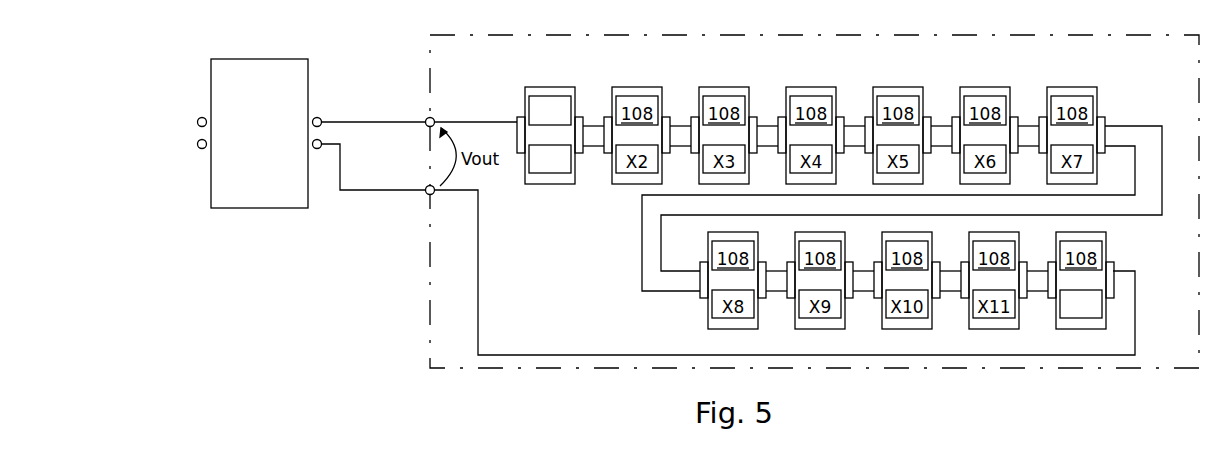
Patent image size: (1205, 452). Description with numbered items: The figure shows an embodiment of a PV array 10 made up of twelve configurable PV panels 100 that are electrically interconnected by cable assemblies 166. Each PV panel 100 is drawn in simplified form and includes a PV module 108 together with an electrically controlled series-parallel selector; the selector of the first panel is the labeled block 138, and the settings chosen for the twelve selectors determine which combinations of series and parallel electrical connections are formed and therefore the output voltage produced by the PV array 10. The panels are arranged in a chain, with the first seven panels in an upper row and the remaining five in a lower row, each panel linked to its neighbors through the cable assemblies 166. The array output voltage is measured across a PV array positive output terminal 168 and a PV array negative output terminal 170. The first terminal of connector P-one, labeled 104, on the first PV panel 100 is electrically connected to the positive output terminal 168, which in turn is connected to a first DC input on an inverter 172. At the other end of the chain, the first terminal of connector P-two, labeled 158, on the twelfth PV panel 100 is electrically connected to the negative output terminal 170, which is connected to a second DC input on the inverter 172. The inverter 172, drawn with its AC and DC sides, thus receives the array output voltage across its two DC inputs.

The PV array 10 is at (1022, 36).
The PV panel 100 is at (545, 141).
The connector P1 terminal 1 104 is at (516, 121).
The PV module 108 is at (534, 123).
The load 138 is at (545, 173).
The connector P2 terminal 1 158 is at (1116, 266).
The cable assembly 166 is at (580, 153).
The PV array positive output terminal 168 is at (427, 118).
The PV array negative output terminal 170 is at (427, 186).
The inverter 172 is at (244, 205).